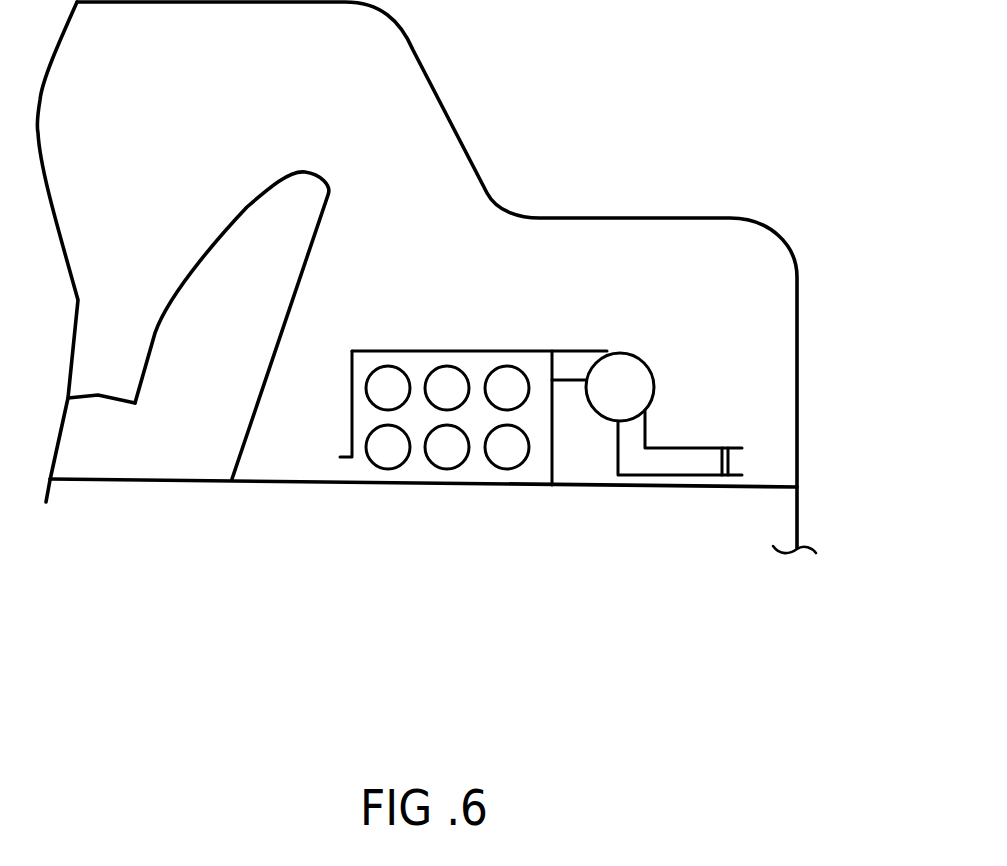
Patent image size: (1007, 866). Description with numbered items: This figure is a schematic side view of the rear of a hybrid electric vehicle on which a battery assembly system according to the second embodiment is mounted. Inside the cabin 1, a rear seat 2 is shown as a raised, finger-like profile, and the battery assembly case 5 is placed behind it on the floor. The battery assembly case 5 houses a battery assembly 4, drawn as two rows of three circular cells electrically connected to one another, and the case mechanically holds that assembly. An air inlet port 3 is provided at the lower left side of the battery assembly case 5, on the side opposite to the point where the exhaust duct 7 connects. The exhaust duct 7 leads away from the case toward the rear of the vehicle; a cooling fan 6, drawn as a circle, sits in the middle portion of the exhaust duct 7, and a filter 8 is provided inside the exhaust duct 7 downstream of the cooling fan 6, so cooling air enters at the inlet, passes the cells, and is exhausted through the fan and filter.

The cabin 1 is at (128, 143).
The rear seat 2 is at (208, 352).
The air inlet port 3 is at (350, 473).
The battery assembly 4 is at (443, 447).
The battery assembly case 5 is at (485, 350).
The cooling fan 6 is at (633, 355).
The exhaust duct 7 is at (668, 463).
The filter 8 is at (728, 466).